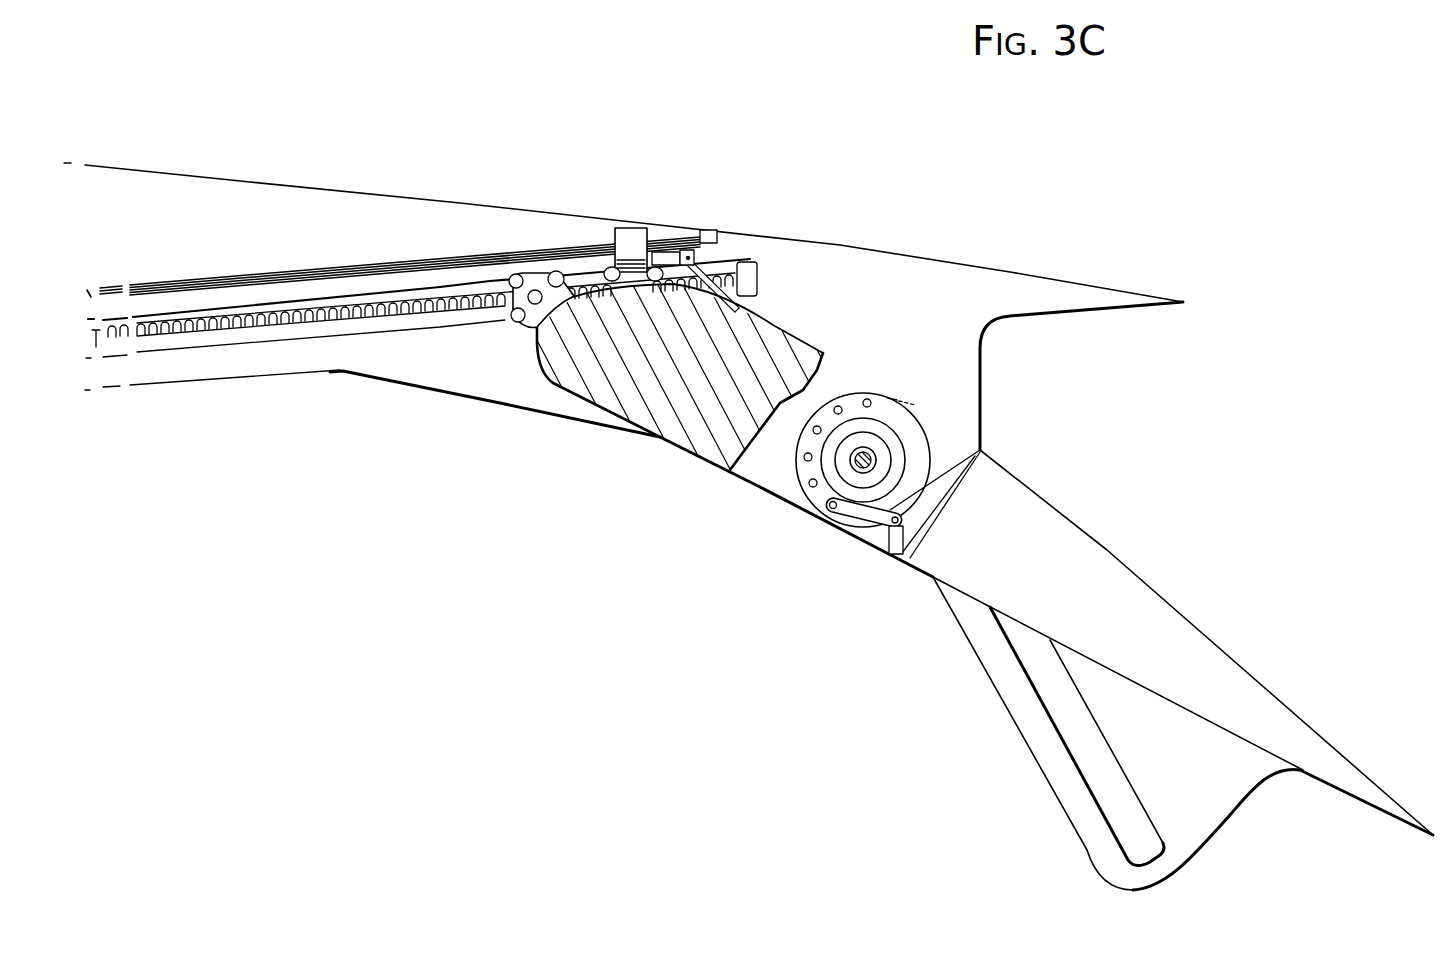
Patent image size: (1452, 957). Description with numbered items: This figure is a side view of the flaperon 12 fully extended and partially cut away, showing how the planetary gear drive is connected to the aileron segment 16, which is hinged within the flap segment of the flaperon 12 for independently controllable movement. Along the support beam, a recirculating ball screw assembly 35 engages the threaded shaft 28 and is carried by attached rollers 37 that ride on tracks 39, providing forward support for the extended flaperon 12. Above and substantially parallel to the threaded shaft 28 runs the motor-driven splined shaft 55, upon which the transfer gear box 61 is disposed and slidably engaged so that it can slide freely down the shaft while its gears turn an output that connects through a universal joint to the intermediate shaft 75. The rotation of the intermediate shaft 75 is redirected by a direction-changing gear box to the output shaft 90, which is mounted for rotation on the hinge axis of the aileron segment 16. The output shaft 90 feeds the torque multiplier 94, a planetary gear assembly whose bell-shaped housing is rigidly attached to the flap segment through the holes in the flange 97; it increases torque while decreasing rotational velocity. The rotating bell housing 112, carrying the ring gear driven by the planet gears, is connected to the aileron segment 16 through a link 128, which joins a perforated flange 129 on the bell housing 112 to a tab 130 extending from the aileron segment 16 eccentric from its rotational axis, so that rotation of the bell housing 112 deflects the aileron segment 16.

The flaperon 12 is at (1098, 504).
The aileron segment 16 is at (1220, 644).
The threaded shaft 28 is at (184, 333).
The recirculating ball screw assembly 35 is at (512, 316).
The rollers 37 is at (547, 272).
The tracks 39 is at (263, 336).
The splined shaft 55 is at (247, 275).
The transfer gear box 61 is at (620, 228).
The intermediate shaft 75 is at (738, 309).
The output shaft 90 is at (877, 456).
The torque multiplier 94 is at (800, 498).
The flange 97 is at (798, 485).
The bell housing 112 is at (827, 448).
The link 128 is at (863, 522).
The perforated flange 129 is at (817, 506).
The tab 130 is at (902, 560).